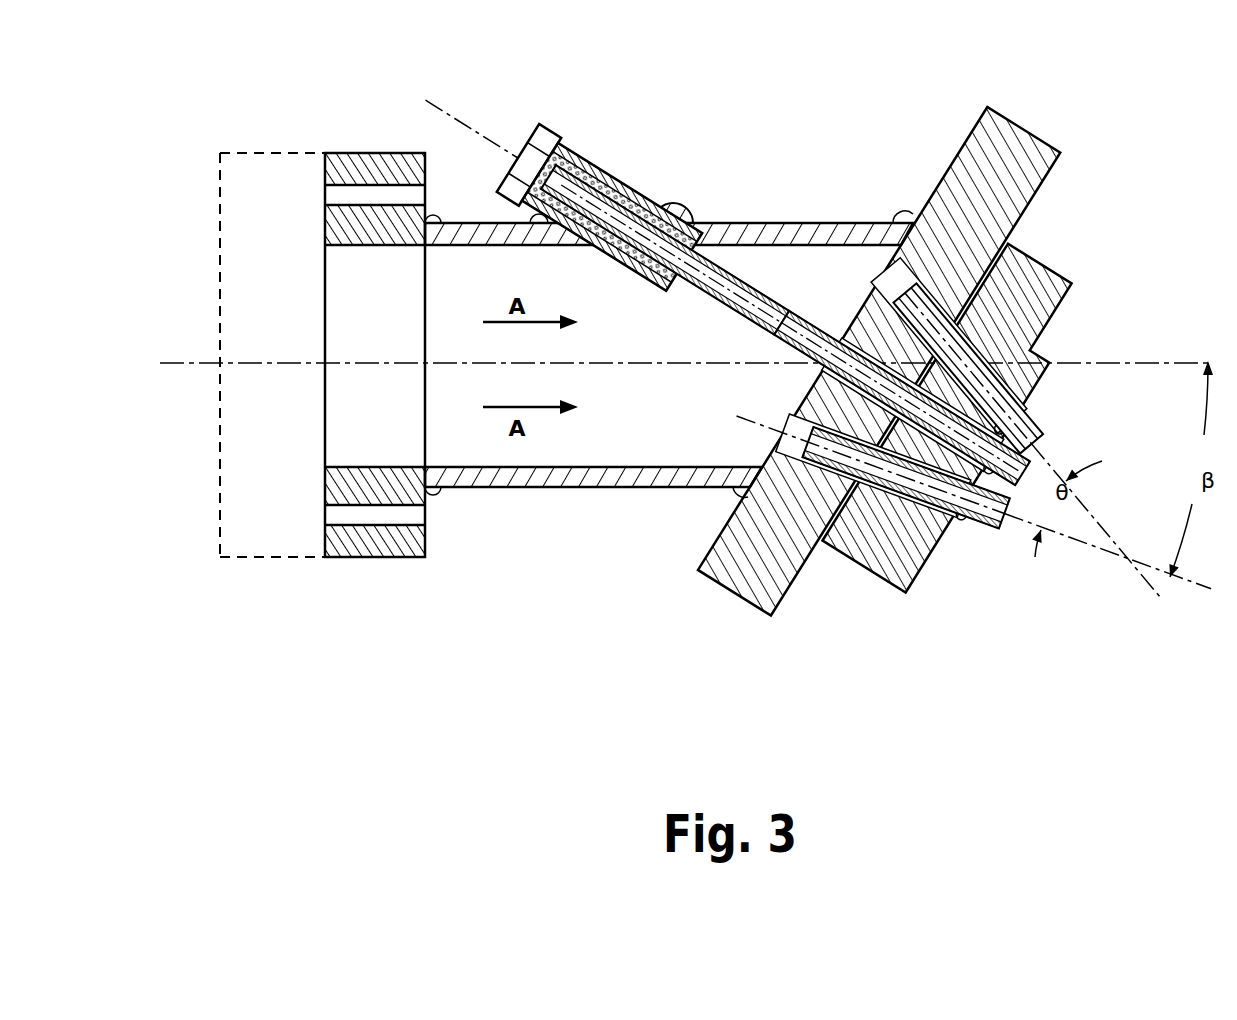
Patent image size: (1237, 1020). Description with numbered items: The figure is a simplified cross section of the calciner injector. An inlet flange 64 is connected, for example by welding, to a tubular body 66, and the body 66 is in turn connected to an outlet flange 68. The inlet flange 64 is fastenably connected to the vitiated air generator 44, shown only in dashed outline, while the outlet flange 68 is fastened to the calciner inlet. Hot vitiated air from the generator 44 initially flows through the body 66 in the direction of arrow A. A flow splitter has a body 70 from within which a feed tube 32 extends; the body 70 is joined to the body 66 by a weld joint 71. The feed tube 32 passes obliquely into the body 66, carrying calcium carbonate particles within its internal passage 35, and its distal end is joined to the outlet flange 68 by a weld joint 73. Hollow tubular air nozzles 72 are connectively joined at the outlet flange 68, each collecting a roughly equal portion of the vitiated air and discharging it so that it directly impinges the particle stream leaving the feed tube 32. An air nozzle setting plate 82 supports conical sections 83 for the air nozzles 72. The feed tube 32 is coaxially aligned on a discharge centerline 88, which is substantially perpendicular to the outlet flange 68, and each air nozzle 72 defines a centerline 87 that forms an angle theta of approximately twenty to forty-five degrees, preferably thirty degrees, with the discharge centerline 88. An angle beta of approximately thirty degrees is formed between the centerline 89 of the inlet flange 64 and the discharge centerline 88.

The vitiated air generator 44 is at (242, 172).
The inlet flange 64 is at (335, 557).
The body 66 is at (527, 478).
The outlet flange 68 is at (725, 572).
The body 70 is at (605, 180).
The weld joint 71 is at (679, 209).
The feed tube 32 is at (743, 290).
The internal passage 35 is at (778, 317).
The air nozzles 72 is at (1050, 441).
The weld joint 73 is at (1010, 505).
The air nozzle setting plate 82 is at (917, 263).
The conical sections 83 is at (915, 250).
The centerline 87 is at (1103, 512).
The discharge centerline 88 is at (1179, 582).
The centerline 89 is at (1180, 361).